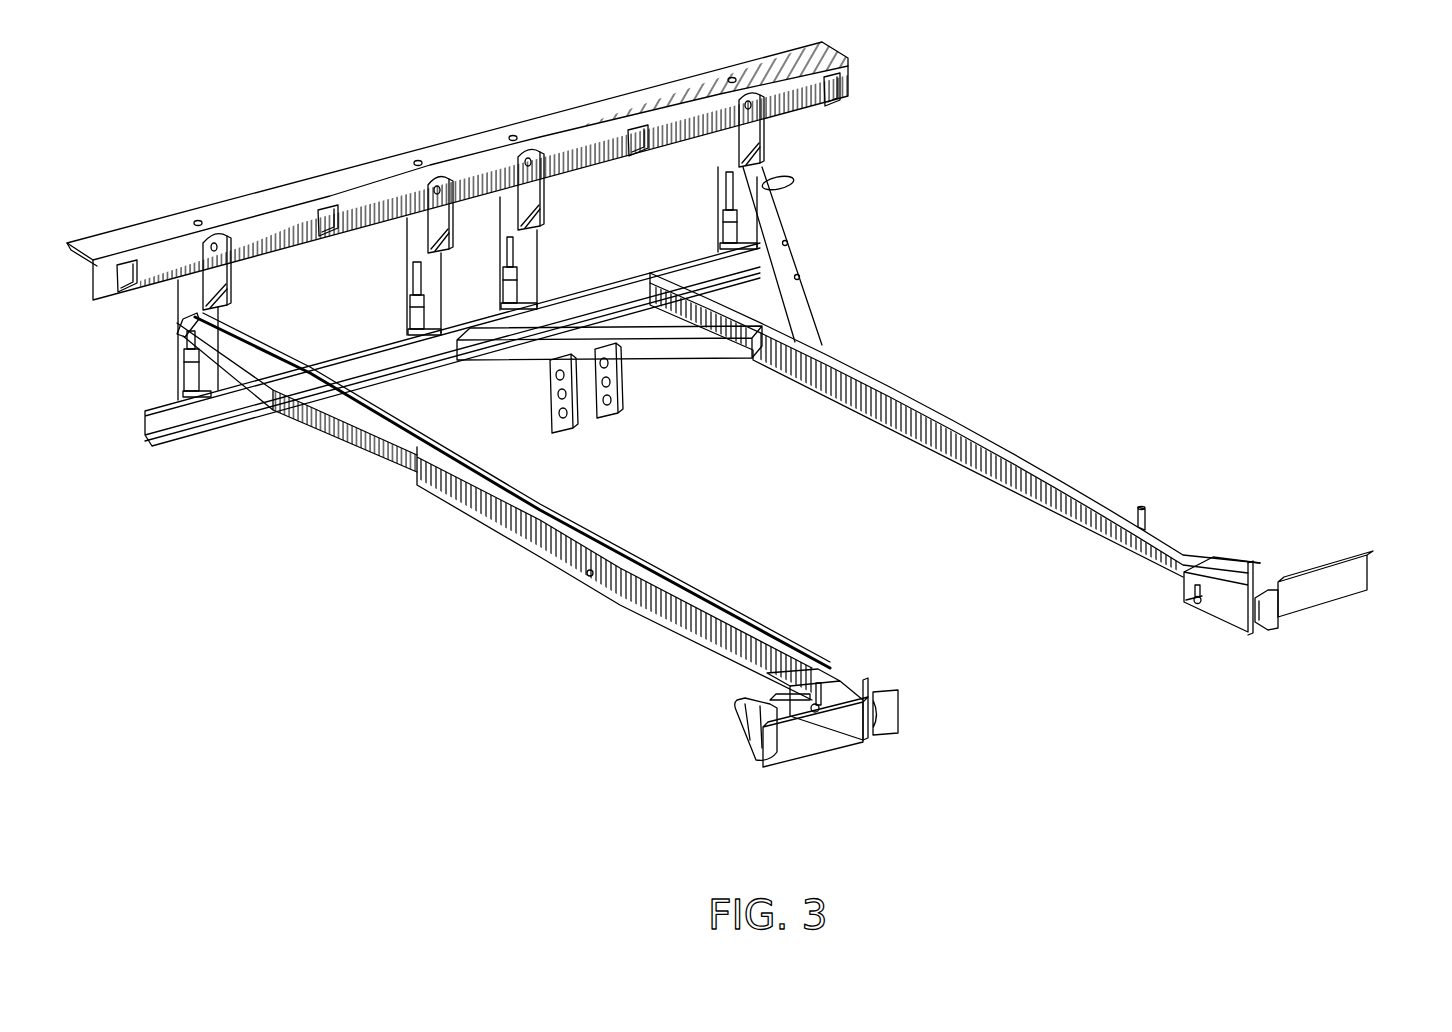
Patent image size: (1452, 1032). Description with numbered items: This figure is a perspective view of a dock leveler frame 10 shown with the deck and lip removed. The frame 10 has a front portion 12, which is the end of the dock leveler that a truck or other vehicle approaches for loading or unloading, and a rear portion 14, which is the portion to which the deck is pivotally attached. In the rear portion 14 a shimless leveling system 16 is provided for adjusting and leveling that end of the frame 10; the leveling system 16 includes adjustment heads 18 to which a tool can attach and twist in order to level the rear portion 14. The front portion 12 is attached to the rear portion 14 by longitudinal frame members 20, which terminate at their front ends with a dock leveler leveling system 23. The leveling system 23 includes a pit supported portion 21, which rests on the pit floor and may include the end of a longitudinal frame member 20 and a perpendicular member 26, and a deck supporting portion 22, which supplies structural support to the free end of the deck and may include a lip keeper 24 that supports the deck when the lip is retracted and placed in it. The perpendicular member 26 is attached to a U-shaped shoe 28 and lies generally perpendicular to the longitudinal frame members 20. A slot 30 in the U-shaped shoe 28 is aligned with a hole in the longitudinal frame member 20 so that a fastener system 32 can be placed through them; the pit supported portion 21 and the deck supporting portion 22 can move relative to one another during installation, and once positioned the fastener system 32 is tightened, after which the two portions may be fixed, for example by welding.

The dock leveler frame 10 is at (914, 214).
The front portion 12 is at (1150, 497).
The rear portion 14 is at (865, 86).
The shimless leveling system 16 is at (190, 365).
The adjustment heads 18 is at (198, 220).
The longitudinal frame members 20 is at (577, 527).
The pit supported portion 21 is at (868, 671).
The deck supporting portion 22 is at (912, 696).
The dock leveler leveling system 23 is at (808, 766).
The lip keeper 24 is at (890, 712).
The perpendicular member 26 is at (823, 737).
The U-shaped shoe 28 is at (1232, 617).
The slot 30 is at (833, 677).
The fastener system 32 is at (798, 708).